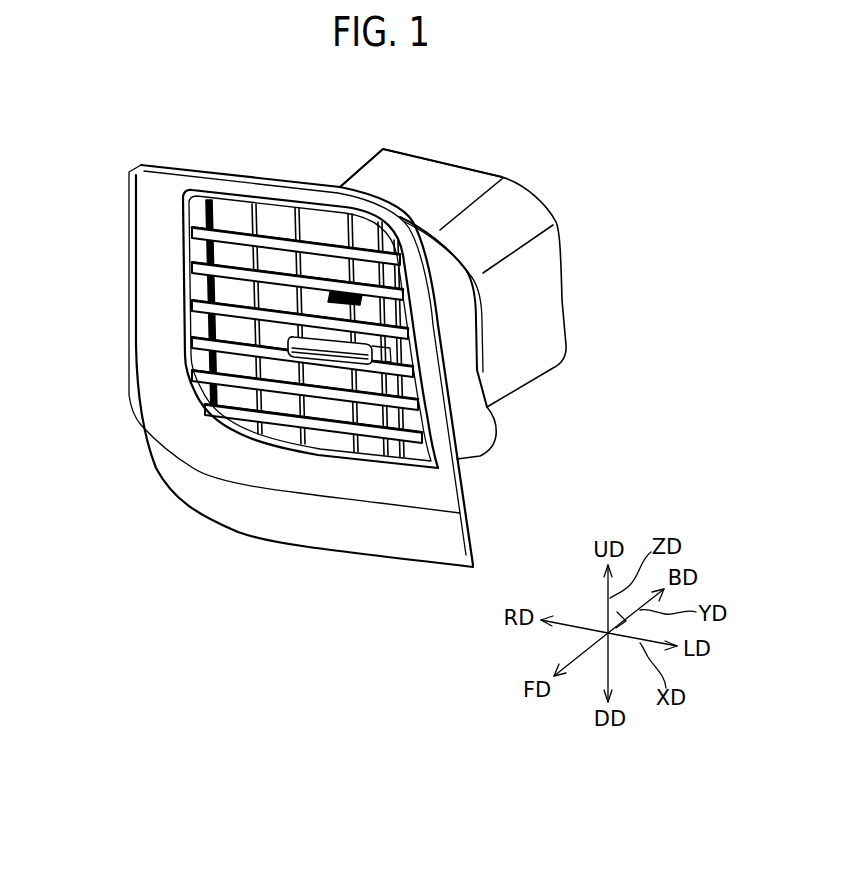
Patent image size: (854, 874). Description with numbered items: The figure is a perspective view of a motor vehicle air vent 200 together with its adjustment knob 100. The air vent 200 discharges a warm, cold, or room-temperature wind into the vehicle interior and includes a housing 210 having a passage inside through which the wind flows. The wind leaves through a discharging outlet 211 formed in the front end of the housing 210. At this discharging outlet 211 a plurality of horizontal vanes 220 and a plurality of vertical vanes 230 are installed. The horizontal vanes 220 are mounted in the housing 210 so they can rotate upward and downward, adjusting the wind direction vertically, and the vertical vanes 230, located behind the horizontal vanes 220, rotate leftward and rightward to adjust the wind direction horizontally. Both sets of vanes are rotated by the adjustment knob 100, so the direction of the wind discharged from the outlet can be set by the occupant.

The adjustment knob 100 is at (318, 355).
The air vent 200 is at (495, 122).
The housing 210 is at (540, 319).
The discharging outlet 211 is at (430, 407).
The horizontal vanes 220 is at (182, 205).
The vertical vanes 230 is at (305, 262).